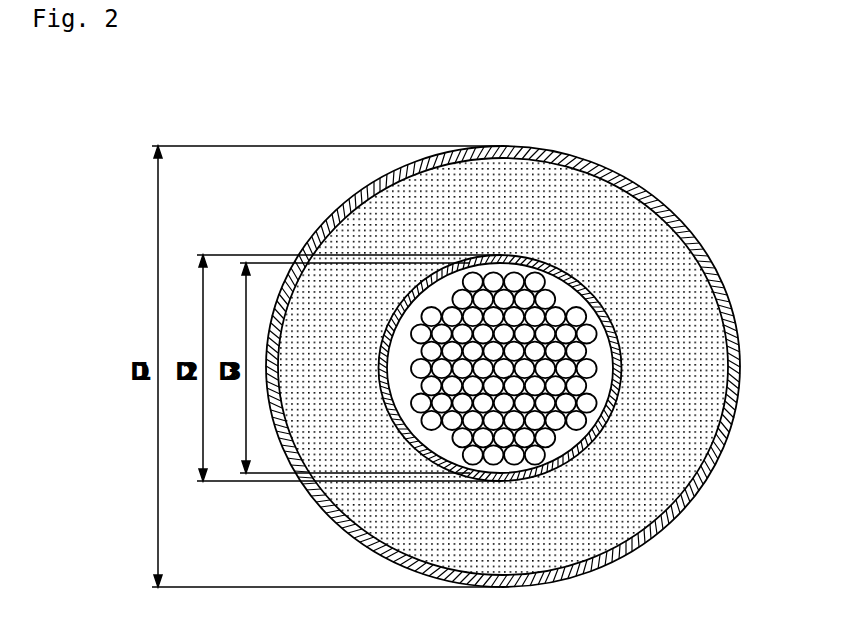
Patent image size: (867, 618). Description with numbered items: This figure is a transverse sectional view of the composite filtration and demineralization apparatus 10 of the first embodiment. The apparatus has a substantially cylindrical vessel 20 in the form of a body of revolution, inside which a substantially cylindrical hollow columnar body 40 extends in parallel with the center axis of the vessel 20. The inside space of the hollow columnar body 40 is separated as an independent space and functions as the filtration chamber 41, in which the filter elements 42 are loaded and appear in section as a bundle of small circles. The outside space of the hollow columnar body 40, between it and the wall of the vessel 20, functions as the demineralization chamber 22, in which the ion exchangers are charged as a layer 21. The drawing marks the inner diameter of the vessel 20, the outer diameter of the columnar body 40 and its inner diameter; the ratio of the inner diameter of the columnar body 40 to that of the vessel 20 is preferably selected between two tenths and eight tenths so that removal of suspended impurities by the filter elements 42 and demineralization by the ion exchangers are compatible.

The composite filtration and demineralization apparatus 10 is at (616, 100).
The vessel 20 is at (672, 208).
The layer 21 is at (503, 344).
The demineralization chamber 22 is at (618, 171).
The hollow columnar body 40 is at (582, 368).
The filtration chamber 41 is at (622, 380).
The filter elements 42 is at (576, 317).